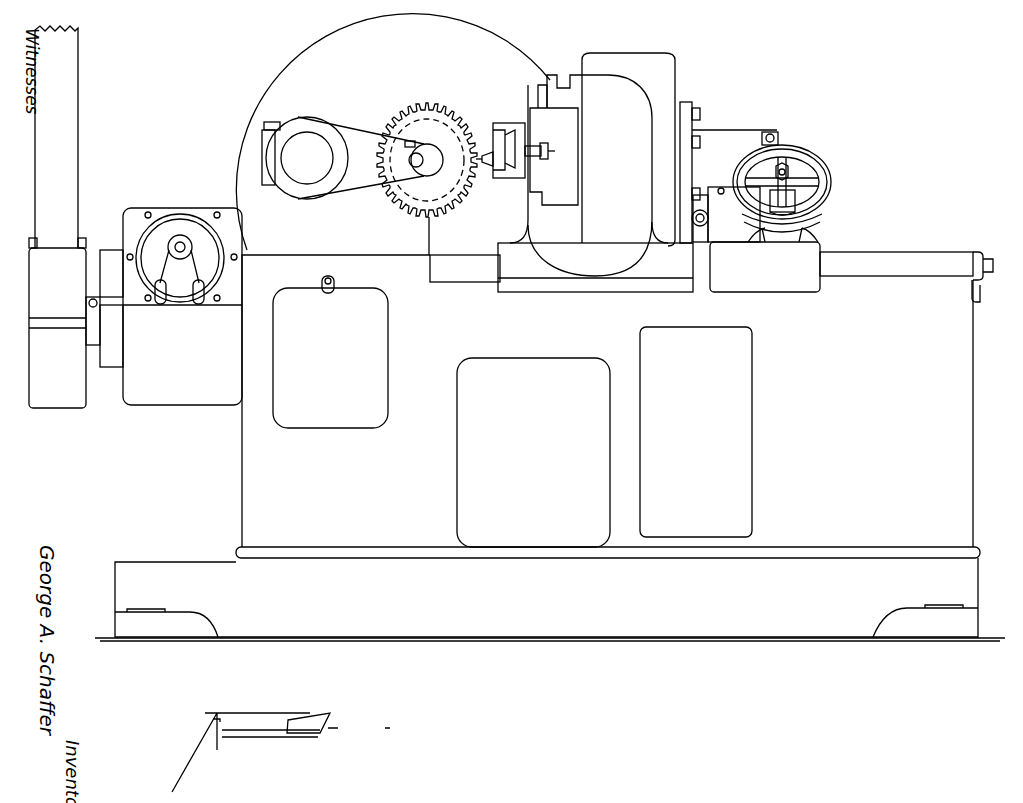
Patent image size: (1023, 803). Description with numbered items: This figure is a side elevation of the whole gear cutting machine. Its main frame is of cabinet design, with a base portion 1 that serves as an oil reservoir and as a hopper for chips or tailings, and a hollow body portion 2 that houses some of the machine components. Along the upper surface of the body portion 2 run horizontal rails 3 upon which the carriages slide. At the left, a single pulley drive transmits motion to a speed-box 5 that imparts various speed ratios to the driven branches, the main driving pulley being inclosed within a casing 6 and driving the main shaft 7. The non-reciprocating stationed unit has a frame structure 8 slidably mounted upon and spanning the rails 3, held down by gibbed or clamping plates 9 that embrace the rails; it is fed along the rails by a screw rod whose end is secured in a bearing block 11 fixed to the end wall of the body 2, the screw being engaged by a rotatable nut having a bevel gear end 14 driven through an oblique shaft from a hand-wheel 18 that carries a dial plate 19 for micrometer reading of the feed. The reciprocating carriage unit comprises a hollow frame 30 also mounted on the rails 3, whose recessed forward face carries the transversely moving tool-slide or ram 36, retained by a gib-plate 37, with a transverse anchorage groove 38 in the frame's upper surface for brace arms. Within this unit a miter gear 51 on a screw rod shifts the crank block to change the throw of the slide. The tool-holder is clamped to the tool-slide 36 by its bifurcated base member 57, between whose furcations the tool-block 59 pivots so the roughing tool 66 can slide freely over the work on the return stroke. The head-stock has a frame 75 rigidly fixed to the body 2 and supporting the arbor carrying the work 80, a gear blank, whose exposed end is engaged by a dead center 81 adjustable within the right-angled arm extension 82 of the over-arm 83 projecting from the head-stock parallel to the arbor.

The base portion 1 is at (550, 599).
The hollow body portion 2 is at (262, 161).
The horizontal rail 3 is at (711, 267).
The speed-box 5 is at (171, 306).
The casing 6 is at (64, 217).
The main shaft 7 is at (246, 752).
The frame structure 8 is at (816, 242).
The gibbed or clamping plates 9 is at (794, 292).
The bearing block 11 is at (986, 291).
The bevel gear end 14 is at (308, 413).
The hand-wheel 18 is at (830, 170).
The dial plate 19 is at (812, 197).
The frame of the reciprocating carriage unit 30 is at (595, 172).
The tool-slide or ram 36 is at (554, 156).
The gib-plate 37 is at (538, 93).
The transverse anchorage groove 38 is at (563, 74).
The miter gear 51 is at (372, 713).
The bifurcated base member 57 is at (532, 195).
The tool-block 59 is at (507, 130).
The roughing tool 66 is at (484, 173).
The head-stock frame 75 is at (430, 239).
The work 80 is at (455, 120).
The dead center 81 is at (431, 158).
The right-angled arm extension 82 is at (361, 158).
The over-arm 83 is at (307, 116).